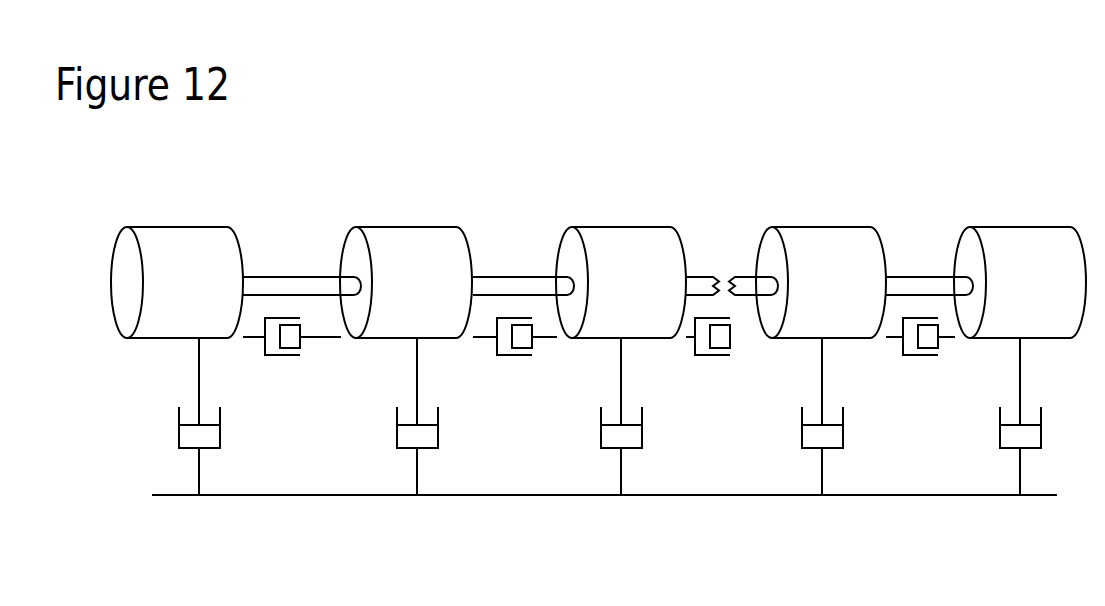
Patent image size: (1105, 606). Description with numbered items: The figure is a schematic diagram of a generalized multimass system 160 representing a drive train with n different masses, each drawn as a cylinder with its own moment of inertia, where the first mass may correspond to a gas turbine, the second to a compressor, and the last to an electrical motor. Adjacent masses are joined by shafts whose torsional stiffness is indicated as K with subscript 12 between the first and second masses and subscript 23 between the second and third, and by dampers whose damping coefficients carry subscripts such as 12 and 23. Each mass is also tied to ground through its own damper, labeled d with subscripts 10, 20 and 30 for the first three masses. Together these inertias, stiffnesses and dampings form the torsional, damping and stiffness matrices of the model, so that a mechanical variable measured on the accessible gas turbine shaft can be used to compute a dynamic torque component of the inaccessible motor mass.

The generalized multimass system 160 is at (647, 119).
The shaft stiffness K12 between J1 and J2 12 is at (302, 269).
The shaft stiffness K23 between J2 and J3 23 is at (523, 269).
The ground damper d10 of mass J1 10 is at (199, 441).
The ground damper d20 of mass J2 20 is at (417, 441).
The ground damper d30 of mass J3 30 is at (622, 441).